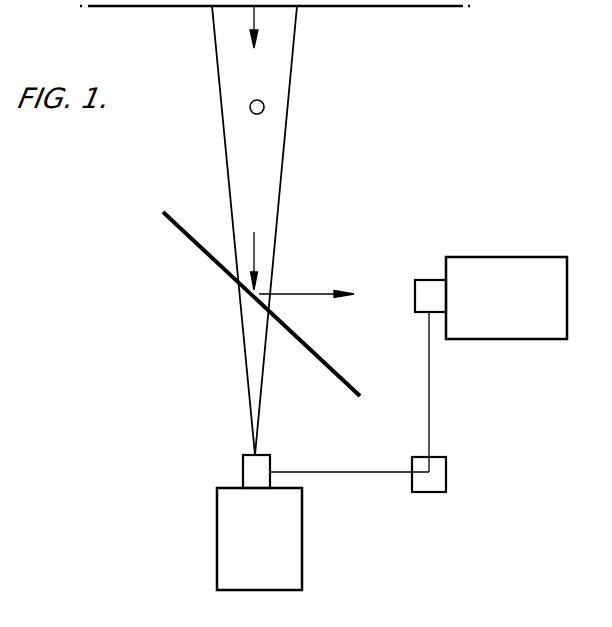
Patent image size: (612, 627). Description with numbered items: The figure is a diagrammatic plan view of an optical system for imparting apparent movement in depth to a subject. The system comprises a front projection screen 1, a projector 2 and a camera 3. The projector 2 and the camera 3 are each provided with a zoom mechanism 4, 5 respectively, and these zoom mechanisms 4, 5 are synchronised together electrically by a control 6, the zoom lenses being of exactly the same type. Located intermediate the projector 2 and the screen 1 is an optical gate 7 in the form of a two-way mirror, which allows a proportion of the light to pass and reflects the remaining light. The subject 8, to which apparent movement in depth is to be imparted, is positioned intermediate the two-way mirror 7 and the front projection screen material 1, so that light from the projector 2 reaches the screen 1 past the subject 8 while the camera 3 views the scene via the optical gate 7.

The front projection screen 1 is at (432, 8).
The projector 2 is at (262, 551).
The camera 3 is at (502, 262).
The zoom mechanism 4 is at (243, 463).
The zoom mechanism 5 is at (428, 280).
The control 6 is at (447, 477).
The optical gate 7 is at (192, 243).
The subject 8 is at (264, 110).